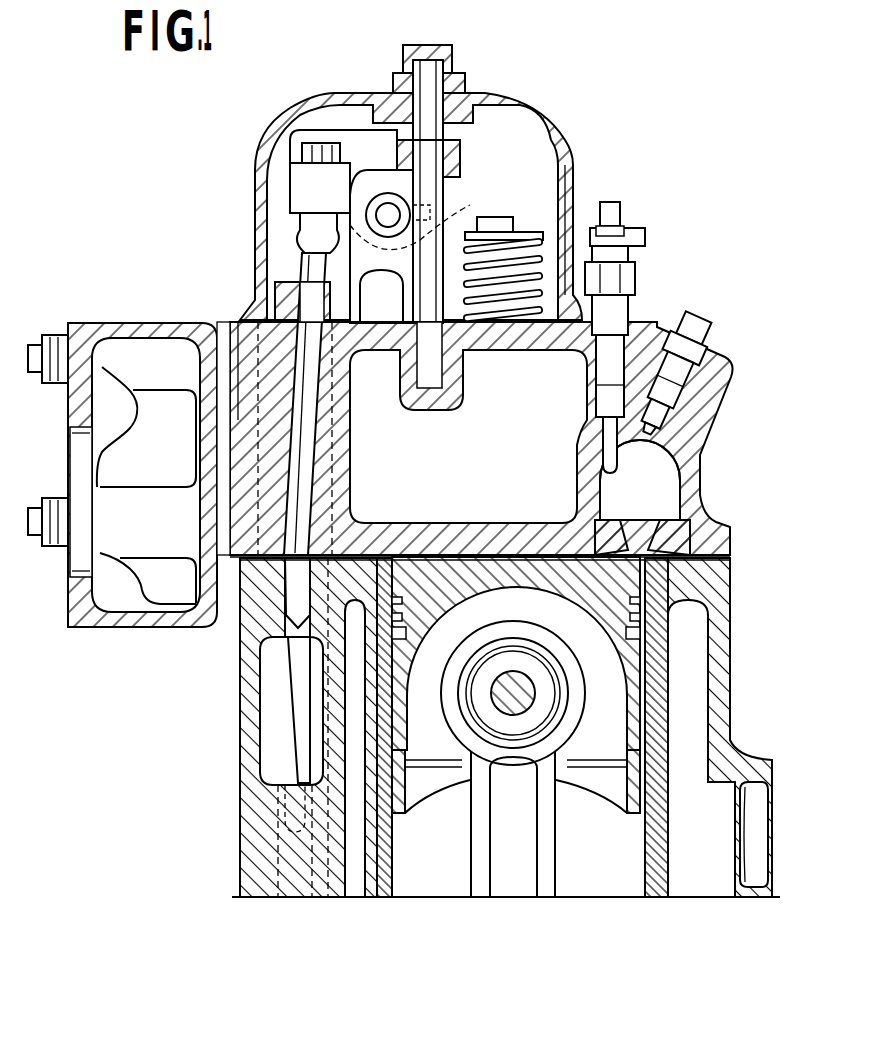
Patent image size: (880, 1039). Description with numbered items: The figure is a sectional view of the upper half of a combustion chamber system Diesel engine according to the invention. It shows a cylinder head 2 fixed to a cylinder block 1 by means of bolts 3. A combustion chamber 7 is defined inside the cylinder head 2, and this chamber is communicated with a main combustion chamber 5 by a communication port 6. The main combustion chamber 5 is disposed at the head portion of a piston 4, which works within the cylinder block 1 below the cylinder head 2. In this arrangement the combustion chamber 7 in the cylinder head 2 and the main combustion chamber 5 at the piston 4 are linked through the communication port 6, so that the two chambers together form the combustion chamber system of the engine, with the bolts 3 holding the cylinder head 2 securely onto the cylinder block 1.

The cylinder block 1 is at (730, 717).
The cylinder head 2 is at (722, 385).
The bolts 3 is at (200, 560).
The piston 4 is at (628, 668).
The main combustion chamber 5 is at (727, 605).
The communication port 6 is at (730, 580).
The combustion chamber 7 is at (663, 483).